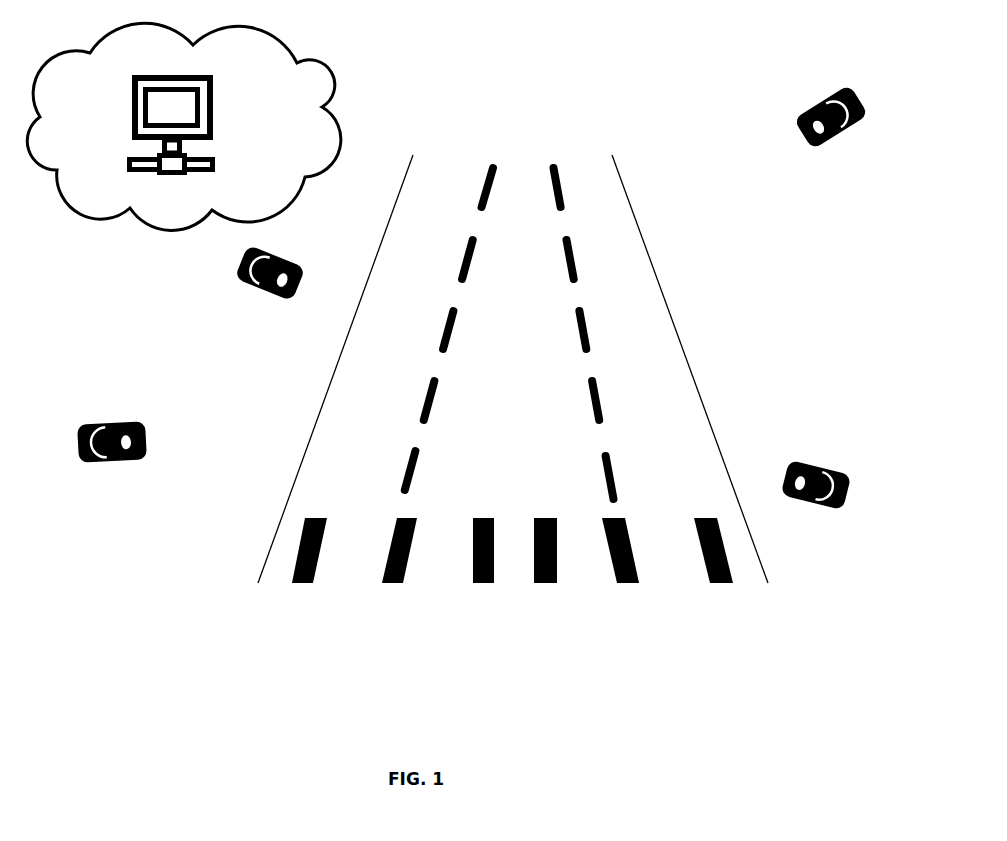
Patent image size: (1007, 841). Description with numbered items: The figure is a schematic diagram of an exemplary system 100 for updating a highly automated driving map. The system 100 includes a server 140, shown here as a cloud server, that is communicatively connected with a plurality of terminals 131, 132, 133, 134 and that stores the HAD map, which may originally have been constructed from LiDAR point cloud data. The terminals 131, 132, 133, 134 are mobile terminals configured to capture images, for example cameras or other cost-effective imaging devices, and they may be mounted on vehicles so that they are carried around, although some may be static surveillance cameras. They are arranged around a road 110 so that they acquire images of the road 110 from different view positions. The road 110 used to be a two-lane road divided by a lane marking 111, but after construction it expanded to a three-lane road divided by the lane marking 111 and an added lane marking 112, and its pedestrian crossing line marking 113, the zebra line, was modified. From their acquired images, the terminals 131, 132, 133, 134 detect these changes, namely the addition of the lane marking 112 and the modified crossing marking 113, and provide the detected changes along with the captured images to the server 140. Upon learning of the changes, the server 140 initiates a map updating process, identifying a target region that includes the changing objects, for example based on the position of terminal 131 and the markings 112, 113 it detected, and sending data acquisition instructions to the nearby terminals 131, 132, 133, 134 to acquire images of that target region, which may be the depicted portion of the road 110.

The system 100 is at (143, 625).
The road 110 is at (702, 325).
The lane marking 111 is at (449, 403).
The lane marking 112 is at (614, 399).
The pedestrian crossing line marking 113 is at (593, 595).
The terminal 131 is at (270, 294).
The terminal 132 is at (117, 462).
The terminal 133 is at (835, 132).
The terminal 134 is at (816, 500).
The server 140 is at (184, 126).